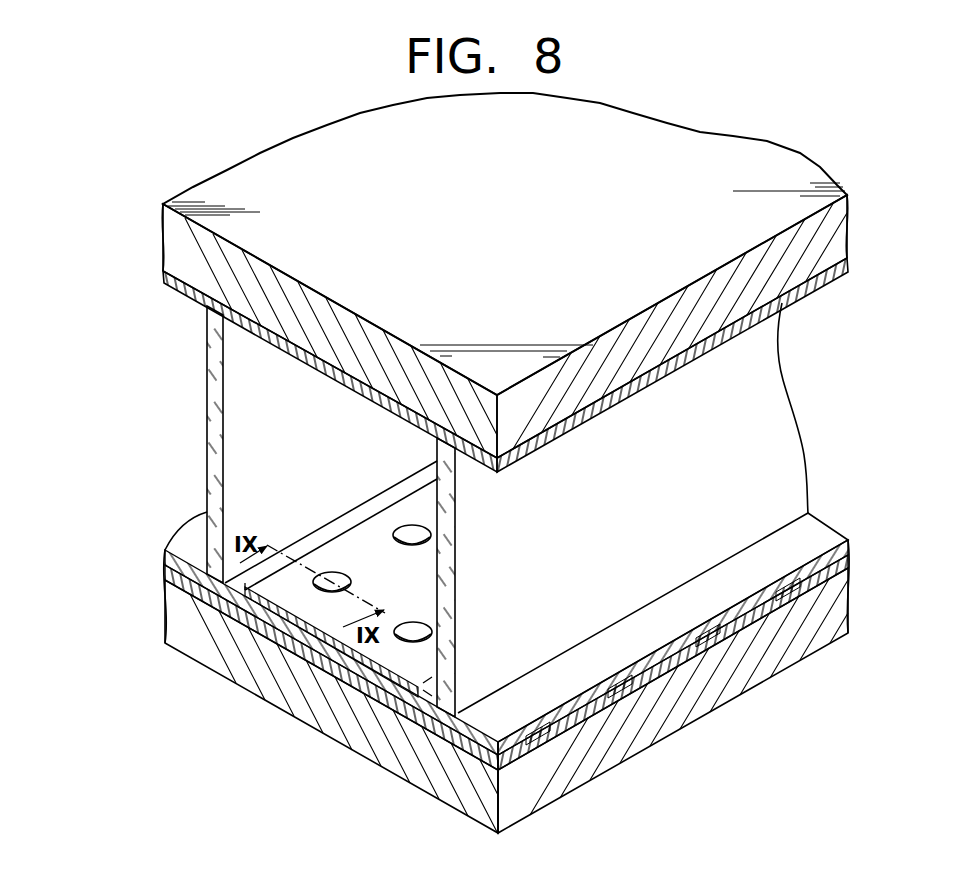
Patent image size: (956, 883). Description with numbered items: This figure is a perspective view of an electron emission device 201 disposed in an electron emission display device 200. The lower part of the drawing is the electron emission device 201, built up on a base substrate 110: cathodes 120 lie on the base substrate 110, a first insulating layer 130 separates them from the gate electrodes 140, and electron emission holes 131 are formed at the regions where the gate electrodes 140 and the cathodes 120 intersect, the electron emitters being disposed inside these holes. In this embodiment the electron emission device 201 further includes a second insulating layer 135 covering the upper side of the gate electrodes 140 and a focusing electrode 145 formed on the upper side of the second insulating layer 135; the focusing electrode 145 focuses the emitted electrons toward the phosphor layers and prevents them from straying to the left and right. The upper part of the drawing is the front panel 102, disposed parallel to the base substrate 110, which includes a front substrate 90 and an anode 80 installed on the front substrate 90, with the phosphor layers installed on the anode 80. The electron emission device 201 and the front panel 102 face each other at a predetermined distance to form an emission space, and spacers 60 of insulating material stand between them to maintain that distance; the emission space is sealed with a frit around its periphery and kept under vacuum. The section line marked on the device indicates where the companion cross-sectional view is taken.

The front substrate 90 is at (163, 212).
The anode 80 is at (164, 277).
The front panel 102 is at (182, 306).
The electron emission display device 200 is at (93, 462).
The electron emission device 201 is at (160, 547).
The spacer 60 is at (206, 433).
The electron emission hole 131 is at (332, 582).
The focusing electrode 145 is at (315, 667).
The gate electrode 140 is at (347, 687).
The first insulating layer 130 is at (392, 713).
The second insulating layer 135 is at (440, 727).
The base substrate 110 is at (473, 800).
The cathode 120 is at (547, 747).